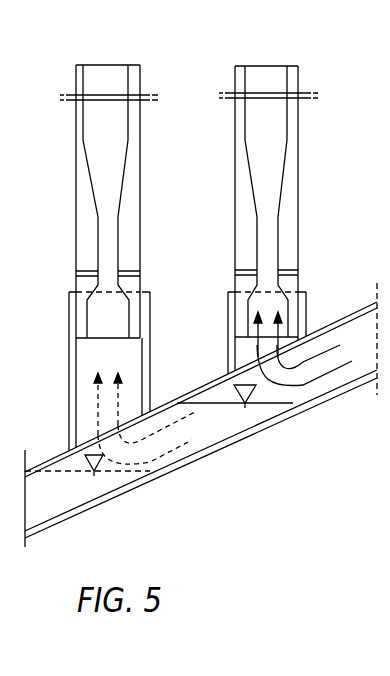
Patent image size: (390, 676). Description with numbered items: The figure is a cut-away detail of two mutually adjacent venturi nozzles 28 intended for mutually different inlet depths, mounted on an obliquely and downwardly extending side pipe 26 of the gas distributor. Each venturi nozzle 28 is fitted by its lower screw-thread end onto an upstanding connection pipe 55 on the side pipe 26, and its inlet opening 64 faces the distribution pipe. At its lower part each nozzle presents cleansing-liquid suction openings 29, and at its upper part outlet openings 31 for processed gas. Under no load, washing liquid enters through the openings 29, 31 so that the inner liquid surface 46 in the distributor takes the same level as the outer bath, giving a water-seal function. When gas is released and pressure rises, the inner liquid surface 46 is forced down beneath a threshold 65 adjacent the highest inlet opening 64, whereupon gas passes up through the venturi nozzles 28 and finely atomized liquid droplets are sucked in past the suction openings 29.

The side pipe 26 is at (218, 447).
The venturi nozzle 28 is at (66, 178).
The cleansing-liquid suction opening 29 is at (235, 272).
The outlet opening 31 is at (108, 82).
The inner liquid surface 46 is at (62, 450).
The connection pipe 55 is at (70, 318).
The inlet opening 64 is at (117, 445).
The threshold 65 is at (150, 440).